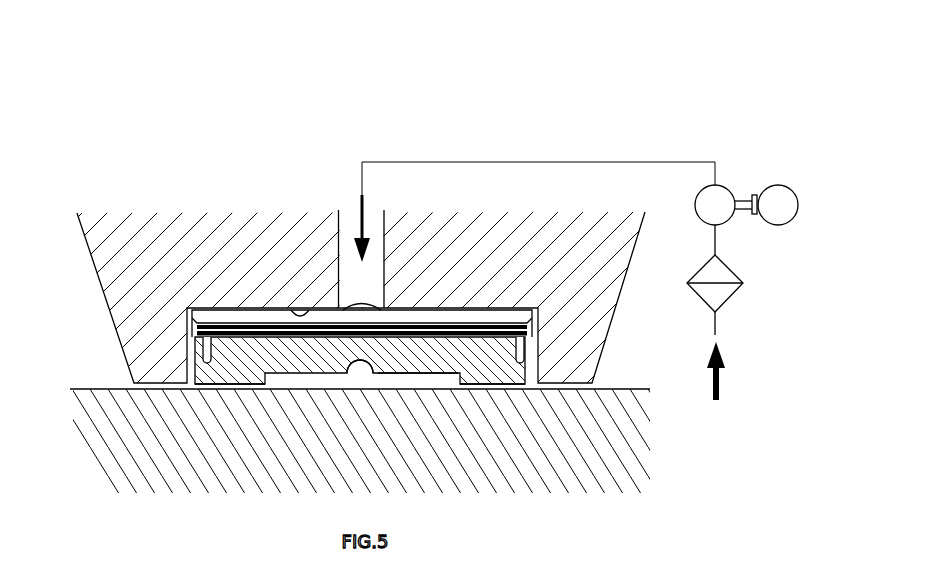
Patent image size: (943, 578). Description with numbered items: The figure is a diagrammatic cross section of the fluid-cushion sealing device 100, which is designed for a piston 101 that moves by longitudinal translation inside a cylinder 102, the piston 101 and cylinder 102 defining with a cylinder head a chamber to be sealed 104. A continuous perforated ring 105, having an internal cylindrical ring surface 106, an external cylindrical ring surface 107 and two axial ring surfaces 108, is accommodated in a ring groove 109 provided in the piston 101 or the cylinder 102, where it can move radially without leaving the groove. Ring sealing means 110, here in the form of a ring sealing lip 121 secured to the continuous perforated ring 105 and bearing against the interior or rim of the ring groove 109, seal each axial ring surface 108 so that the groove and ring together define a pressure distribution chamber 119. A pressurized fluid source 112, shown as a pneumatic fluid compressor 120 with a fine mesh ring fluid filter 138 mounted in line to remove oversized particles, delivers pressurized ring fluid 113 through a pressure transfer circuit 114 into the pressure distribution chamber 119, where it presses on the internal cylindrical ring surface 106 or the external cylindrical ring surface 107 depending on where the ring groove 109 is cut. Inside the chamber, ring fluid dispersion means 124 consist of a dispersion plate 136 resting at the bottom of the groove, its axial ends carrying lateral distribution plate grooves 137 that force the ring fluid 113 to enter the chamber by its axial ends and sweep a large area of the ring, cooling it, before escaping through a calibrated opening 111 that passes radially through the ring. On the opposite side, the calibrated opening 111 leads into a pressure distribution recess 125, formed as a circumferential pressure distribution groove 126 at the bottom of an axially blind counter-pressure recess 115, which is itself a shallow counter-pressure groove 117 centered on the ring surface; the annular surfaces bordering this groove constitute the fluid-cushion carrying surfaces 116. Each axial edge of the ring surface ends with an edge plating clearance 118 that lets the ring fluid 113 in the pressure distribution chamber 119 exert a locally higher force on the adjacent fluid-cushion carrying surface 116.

The fluid-cushion sealing device 100 is at (684, 63).
The piston 101 is at (115, 244).
The cylinder 102 is at (630, 457).
The chamber to be sealed 104 is at (78, 265).
The continuous perforated ring 105 is at (303, 310).
The internal cylindrical ring surface 106 is at (241, 323).
The external cylindrical ring surface 107 is at (310, 390).
The axial ring surfaces 108 is at (186, 346).
The ring groove 109 is at (318, 307).
The ring sealing means 110 is at (186, 360).
The calibrated opening 111 is at (447, 378).
The pressurized fluid source 112 is at (757, 188).
The ring fluid 113 is at (400, 304).
The pressure transfer circuit 114 is at (650, 160).
The counter-pressure recess 115 is at (455, 376).
The fluid-cushion carrying surface 116 is at (238, 384).
The counter-pressure groove 117 is at (282, 374).
The edge plating clearance 118 is at (206, 380).
The pressure distribution chamber 119 is at (440, 318).
The pneumatic fluid compressor 120 is at (728, 227).
The ring sealing lip 121 is at (192, 310).
The ring fluid dispersion means 124 is at (447, 318).
The pressure distribution recess 125 is at (358, 375).
The pressure distribution groove 126 is at (367, 375).
The dispersion plate 136 is at (541, 314).
The lateral distribution plate groove 137 is at (207, 336).
The ring fluid filter 138 is at (728, 298).